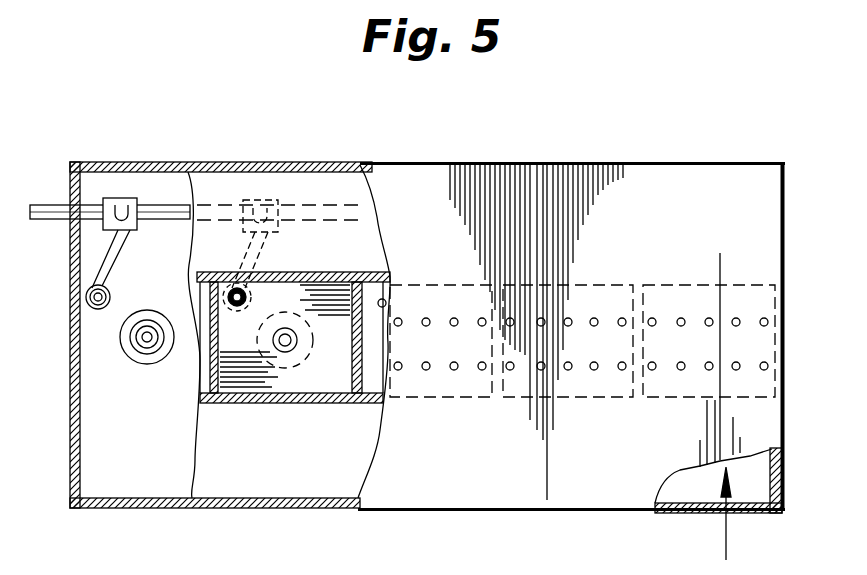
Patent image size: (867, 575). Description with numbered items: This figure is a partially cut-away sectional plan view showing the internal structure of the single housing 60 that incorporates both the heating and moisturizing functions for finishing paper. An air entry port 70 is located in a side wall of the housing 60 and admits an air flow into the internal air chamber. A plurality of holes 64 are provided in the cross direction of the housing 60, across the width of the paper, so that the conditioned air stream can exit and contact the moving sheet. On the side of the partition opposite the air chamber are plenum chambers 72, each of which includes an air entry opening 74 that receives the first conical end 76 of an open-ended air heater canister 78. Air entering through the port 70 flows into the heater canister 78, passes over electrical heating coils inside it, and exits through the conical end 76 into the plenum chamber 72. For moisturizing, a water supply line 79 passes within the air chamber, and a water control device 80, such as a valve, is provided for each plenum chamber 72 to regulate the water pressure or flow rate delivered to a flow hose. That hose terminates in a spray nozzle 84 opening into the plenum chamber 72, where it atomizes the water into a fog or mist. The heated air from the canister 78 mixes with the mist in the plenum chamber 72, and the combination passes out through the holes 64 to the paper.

The housing 60 is at (698, 192).
The holes 64 is at (766, 319).
The air entry port 70 is at (743, 513).
The plenum chambers 72 is at (344, 380).
The air entry opening 74 is at (290, 330).
The first conical end 76 is at (143, 357).
The air heater canister 78 is at (121, 340).
The water supply line 79 is at (158, 208).
The water control device 80 is at (111, 197).
The spray nozzle 84 is at (86, 300).